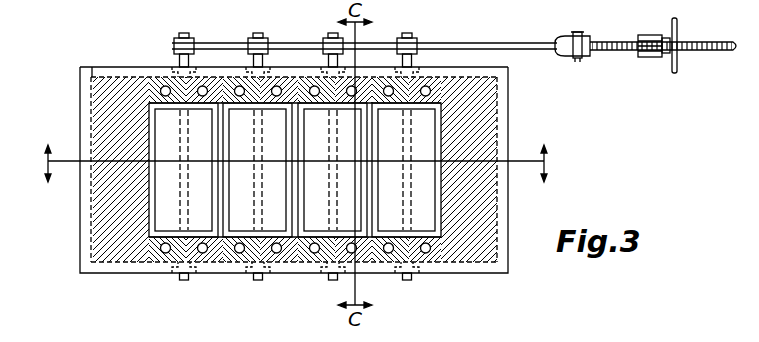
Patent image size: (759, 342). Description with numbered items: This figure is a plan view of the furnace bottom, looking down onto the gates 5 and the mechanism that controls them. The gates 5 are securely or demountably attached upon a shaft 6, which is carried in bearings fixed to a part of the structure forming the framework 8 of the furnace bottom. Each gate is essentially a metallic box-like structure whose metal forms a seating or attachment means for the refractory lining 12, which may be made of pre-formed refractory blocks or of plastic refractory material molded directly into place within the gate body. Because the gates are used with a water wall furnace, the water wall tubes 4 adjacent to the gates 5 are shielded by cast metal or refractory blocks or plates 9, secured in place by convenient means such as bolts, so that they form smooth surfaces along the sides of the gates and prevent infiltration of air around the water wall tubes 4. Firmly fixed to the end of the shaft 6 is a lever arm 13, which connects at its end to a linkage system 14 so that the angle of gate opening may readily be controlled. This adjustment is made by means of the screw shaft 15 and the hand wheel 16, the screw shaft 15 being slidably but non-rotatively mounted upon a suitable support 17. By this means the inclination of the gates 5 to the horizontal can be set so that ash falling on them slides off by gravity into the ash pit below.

The water wall tubes 4 is at (427, 254).
The gates 5 is at (128, 69).
The shaft 6 is at (408, 35).
The framework 8 is at (100, 275).
The blocks or plates 9 is at (152, 263).
The refractory lining 12 is at (220, 262).
The lever arm 13 is at (193, 44).
The linkage system 14 is at (492, 43).
The screw shaft 15 is at (717, 50).
The hand wheel 16 is at (674, 73).
The support 17 is at (652, 57).